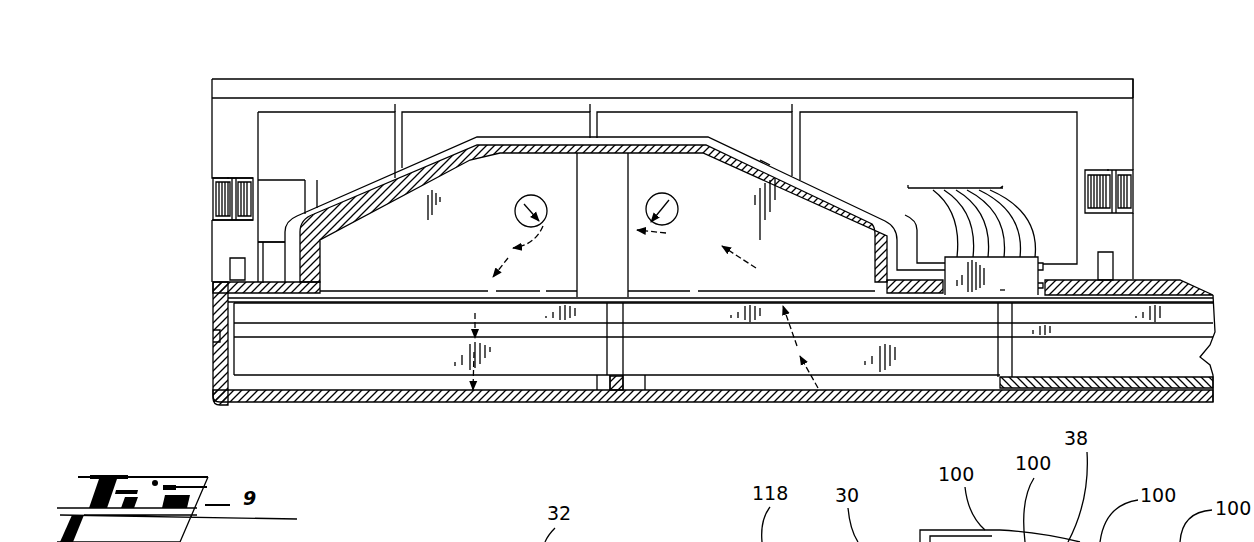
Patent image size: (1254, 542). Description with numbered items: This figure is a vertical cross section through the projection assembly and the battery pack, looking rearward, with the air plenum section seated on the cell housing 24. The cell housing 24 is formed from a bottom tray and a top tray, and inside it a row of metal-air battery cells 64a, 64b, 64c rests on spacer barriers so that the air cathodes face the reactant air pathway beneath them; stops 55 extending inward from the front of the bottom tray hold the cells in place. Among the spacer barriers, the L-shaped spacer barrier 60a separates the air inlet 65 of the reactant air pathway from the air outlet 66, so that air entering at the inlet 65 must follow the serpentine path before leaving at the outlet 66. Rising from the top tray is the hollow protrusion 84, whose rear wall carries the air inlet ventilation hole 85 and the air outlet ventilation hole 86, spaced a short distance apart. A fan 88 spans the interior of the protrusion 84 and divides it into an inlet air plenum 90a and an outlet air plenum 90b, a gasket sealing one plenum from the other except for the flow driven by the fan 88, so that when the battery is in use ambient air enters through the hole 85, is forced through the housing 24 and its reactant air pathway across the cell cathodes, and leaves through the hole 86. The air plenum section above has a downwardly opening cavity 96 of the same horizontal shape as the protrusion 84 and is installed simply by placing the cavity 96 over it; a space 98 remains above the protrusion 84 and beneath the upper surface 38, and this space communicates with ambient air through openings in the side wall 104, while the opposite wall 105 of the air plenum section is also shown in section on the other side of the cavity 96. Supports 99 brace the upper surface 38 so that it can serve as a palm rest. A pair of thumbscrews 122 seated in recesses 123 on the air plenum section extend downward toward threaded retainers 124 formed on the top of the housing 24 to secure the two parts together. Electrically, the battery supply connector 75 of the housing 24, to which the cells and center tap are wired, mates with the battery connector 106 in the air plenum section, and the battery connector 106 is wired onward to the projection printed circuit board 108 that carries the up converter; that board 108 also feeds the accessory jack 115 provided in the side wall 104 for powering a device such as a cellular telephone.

The cell housing 24 is at (212, 375).
The upper surface 38 is at (352, 72).
The stops 55 is at (593, 382).
The spacer barrier 60a is at (618, 398).
The metal-air battery cell 64a is at (398, 366).
The metal-air battery cell 64b is at (763, 363).
The metal-air battery cell 64c is at (1093, 366).
The air inlet 65 is at (382, 398).
The air outlet 66 is at (780, 398).
The battery supply connector 75 is at (1003, 291).
The hollow protrusion 84 is at (308, 252).
The air inlet ventilation hole 85 is at (676, 205).
The air outlet ventilation hole 86 is at (515, 208).
The fan 88 is at (616, 256).
The inlet air plenum 90a is at (838, 256).
The outlet air plenum 90b is at (458, 259).
The cavity 96 is at (835, 182).
The space 98 is at (328, 150).
The supports 99 is at (403, 128).
The side wall 104 is at (205, 145).
The side wall 105 is at (1125, 145).
The battery connector 106 is at (1040, 262).
The projection printed circuit board 108 is at (971, 208).
The accessory jack 115 is at (280, 212).
The thumbscrews 122 is at (215, 192).
The recesses 123 is at (243, 172).
The threaded retainers 124 is at (230, 268).